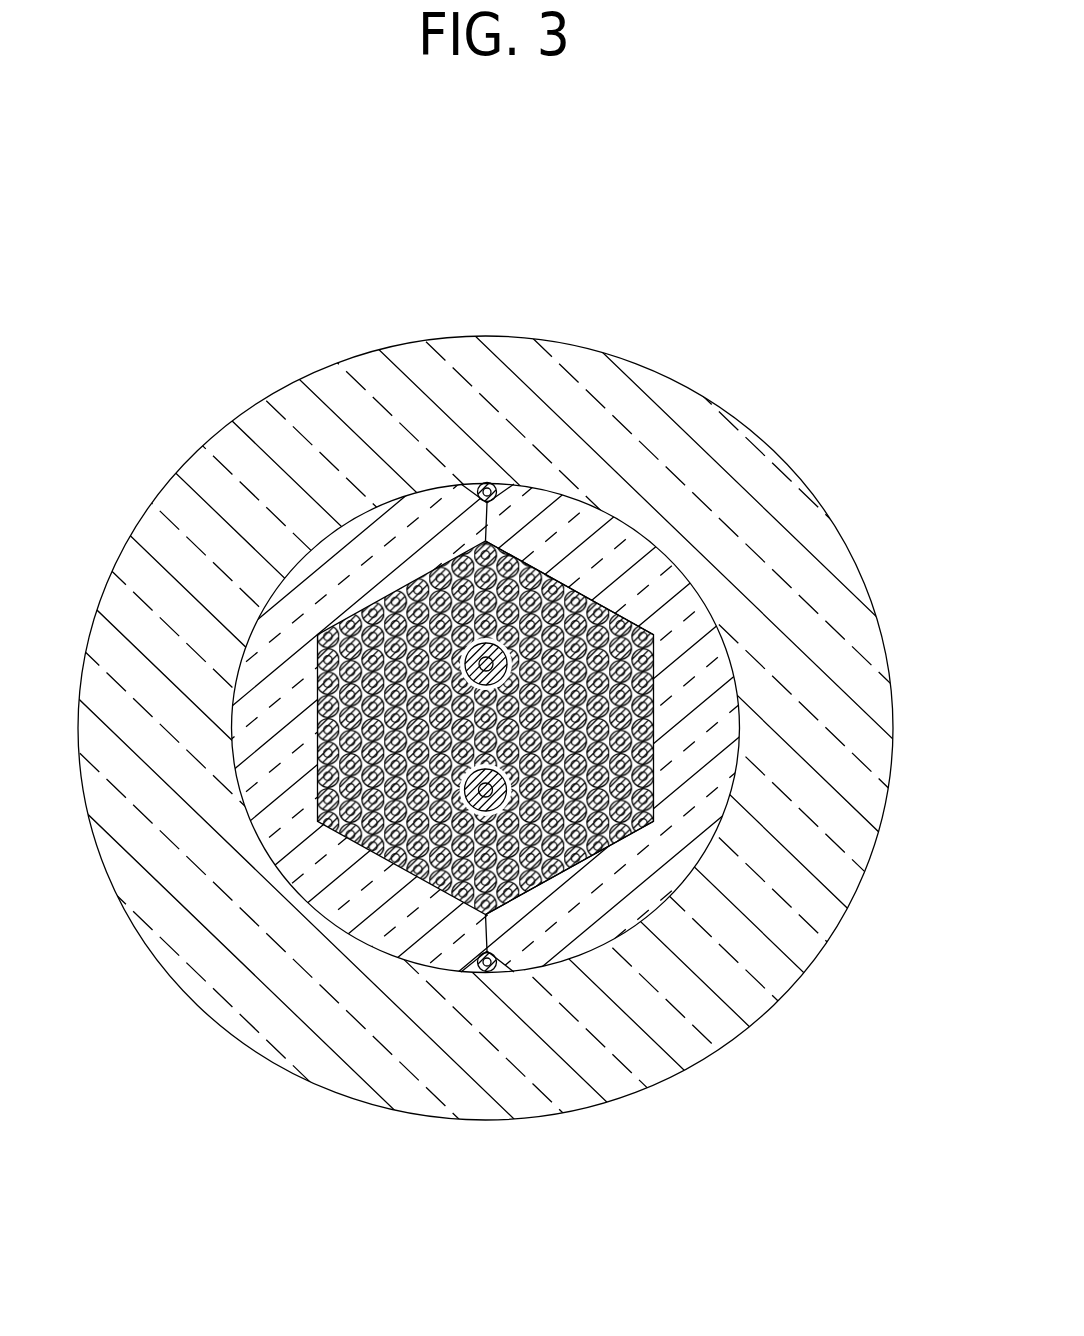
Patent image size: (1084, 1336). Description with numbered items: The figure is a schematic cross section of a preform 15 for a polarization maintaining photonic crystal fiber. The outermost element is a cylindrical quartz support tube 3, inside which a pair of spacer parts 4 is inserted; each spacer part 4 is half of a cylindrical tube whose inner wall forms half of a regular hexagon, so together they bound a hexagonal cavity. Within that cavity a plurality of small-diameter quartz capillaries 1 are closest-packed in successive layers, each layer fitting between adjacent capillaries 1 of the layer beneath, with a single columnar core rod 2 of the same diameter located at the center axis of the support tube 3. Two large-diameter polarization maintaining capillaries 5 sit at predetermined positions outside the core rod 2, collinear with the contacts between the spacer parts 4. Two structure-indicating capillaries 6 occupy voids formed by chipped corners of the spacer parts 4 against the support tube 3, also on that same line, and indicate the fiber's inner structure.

The preform 15 is at (570, 334).
The capillaries 1 is at (653, 724).
The core rod 2 is at (343, 620).
The support tube 3 is at (790, 501).
The spacer parts 4 is at (310, 906).
The polarization maintaining capillaries 5 is at (571, 588).
The structure-indicating capillaries 6 is at (487, 482).